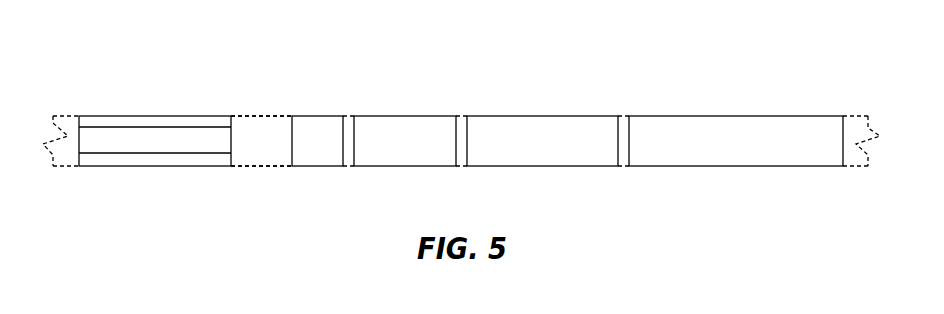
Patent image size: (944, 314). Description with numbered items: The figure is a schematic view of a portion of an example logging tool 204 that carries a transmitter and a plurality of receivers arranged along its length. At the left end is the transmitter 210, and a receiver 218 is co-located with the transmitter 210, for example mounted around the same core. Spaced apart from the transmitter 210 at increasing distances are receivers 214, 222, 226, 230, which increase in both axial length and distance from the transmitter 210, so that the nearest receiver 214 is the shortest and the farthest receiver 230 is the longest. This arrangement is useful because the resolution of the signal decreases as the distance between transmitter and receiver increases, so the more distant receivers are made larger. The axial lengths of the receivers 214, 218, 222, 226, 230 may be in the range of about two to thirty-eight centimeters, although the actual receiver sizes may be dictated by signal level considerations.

The logging tool 204 is at (253, 116).
The transmitter 210 is at (129, 127).
The receiver 214 is at (316, 116).
The receiver 218 is at (178, 116).
The receiver 222 is at (405, 116).
The receiver 226 is at (542, 116).
The receiver 230 is at (737, 116).